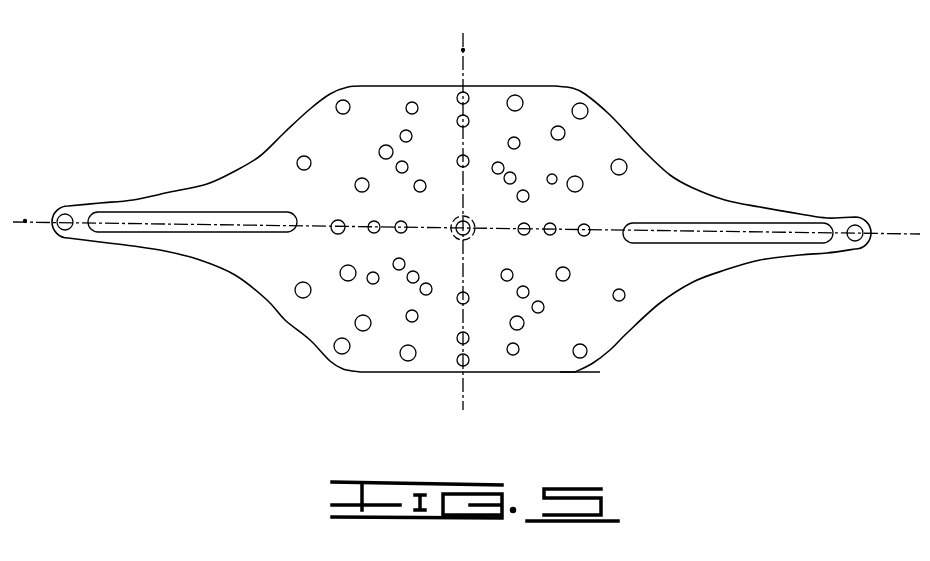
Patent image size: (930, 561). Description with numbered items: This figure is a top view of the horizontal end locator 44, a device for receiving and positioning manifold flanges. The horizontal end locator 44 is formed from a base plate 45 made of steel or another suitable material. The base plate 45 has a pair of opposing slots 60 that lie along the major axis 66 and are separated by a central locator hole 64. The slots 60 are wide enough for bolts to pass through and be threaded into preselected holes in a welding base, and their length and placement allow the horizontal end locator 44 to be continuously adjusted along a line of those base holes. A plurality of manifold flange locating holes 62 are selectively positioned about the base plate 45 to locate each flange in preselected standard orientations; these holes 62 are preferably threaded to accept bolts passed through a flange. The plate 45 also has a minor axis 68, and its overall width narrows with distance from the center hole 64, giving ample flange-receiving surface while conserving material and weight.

The horizontal end locator 44 is at (667, 320).
The base plate 45 is at (552, 345).
The slots 60 is at (214, 236).
The manifold flange locating holes 62 is at (339, 350).
The central locator hole 64 is at (466, 240).
The major axis 66 is at (25, 219).
The minor axis 68 is at (464, 50).